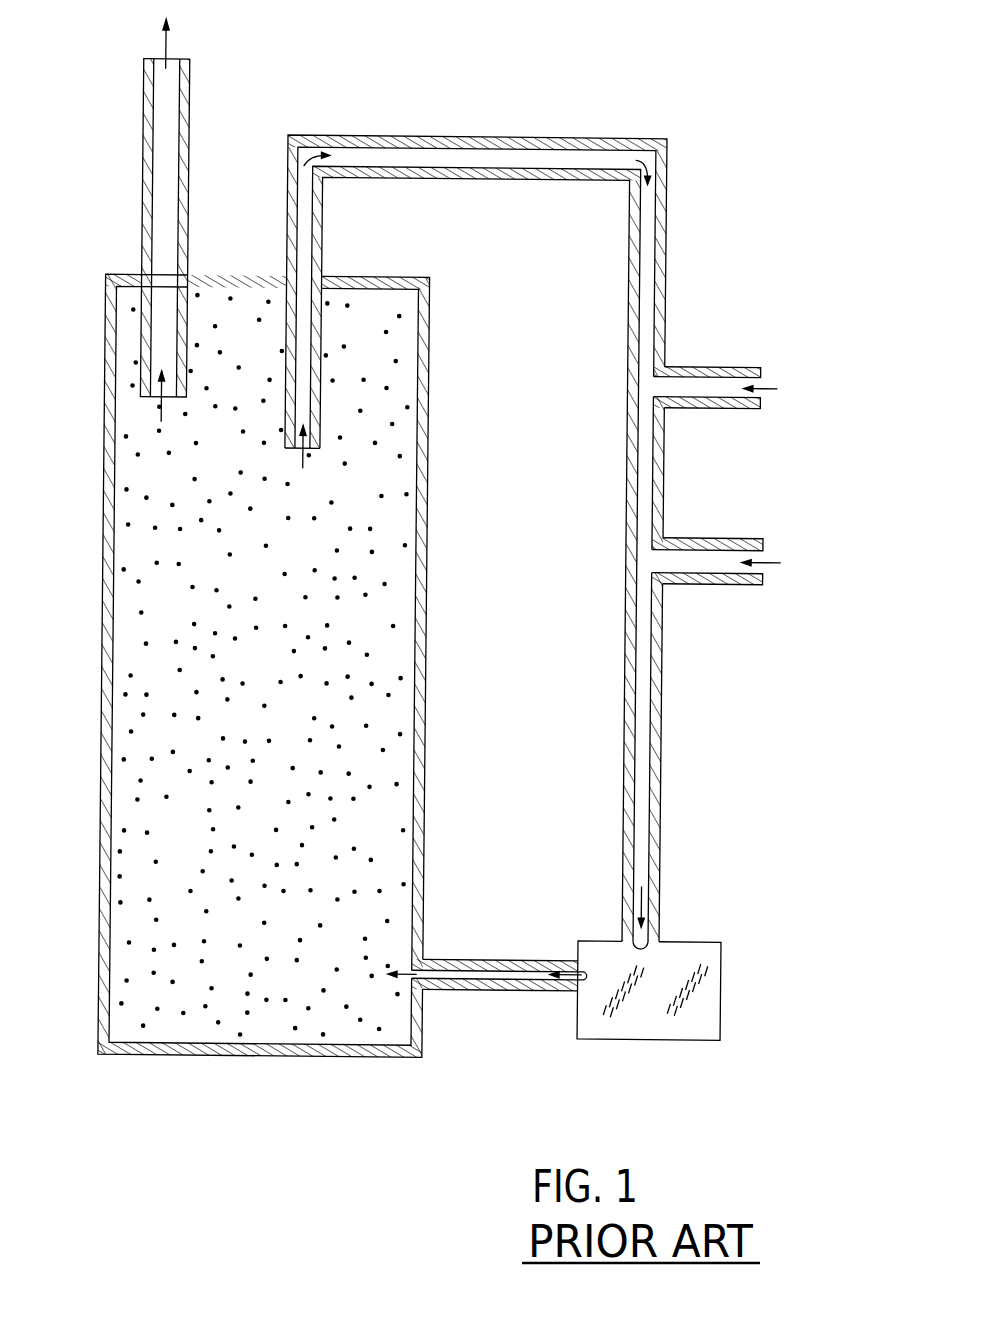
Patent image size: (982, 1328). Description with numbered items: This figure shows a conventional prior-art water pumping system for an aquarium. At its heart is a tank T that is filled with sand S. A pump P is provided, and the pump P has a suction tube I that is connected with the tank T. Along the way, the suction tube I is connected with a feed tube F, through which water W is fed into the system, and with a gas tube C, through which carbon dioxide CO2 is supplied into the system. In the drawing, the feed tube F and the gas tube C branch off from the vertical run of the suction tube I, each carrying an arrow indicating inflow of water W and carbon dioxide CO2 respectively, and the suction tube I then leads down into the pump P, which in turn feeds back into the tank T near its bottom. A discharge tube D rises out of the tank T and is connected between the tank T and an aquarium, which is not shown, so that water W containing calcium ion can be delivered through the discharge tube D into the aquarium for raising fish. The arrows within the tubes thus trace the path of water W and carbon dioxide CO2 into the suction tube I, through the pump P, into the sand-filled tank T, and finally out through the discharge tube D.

The tank T is at (433, 641).
The sand S is at (379, 544).
The discharge tube D is at (189, 133).
The suction tube I is at (387, 132).
The feed tube F is at (724, 363).
The gas tube C is at (744, 580).
The carbon dioxide CO2 is at (768, 538).
The water W is at (164, 44).
The pump P is at (598, 937).